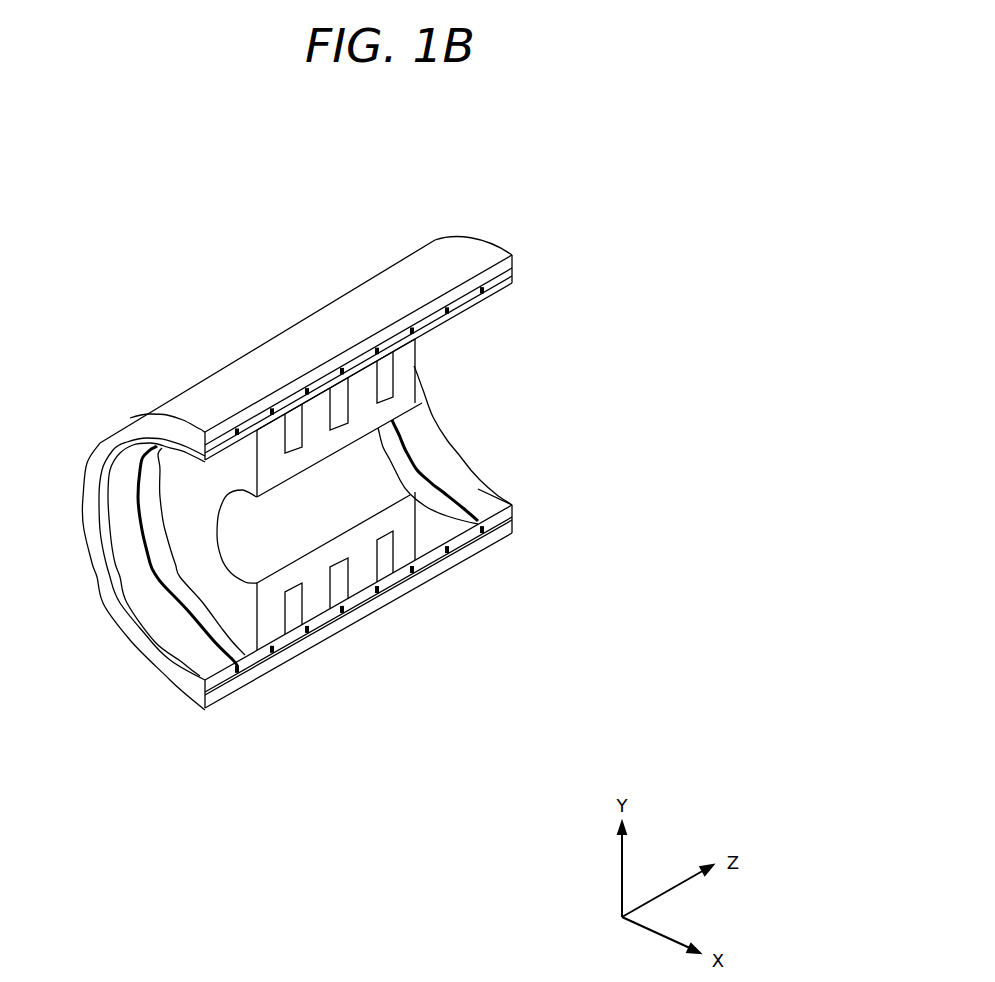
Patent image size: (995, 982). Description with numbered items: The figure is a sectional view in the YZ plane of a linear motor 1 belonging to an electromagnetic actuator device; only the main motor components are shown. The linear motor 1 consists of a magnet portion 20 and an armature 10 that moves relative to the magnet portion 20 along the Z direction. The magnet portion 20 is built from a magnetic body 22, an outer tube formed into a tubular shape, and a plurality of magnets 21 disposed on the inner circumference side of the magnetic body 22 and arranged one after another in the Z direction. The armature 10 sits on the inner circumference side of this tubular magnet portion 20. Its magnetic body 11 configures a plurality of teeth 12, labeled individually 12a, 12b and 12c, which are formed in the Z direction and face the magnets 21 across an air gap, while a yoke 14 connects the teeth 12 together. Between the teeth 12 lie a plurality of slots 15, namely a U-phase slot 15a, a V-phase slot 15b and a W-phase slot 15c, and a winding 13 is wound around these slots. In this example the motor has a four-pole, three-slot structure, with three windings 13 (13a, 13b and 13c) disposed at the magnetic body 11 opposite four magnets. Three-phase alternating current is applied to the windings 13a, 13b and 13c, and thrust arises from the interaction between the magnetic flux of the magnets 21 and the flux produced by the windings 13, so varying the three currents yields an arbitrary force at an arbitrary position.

The linear motor 1 is at (165, 248).
The armature 10 is at (185, 582).
The magnetic body 11 is at (233, 618).
The teeth 12 is at (313, 413).
The upper pillar 12a is at (407, 367).
The upper pillar 12b is at (407, 367).
The upper pillar 12c is at (273, 437).
The winding 13 is at (495, 660).
The winding 13a is at (292, 615).
The winding 13b is at (337, 587).
The winding 13c is at (387, 563).
The yoke 14 is at (313, 568).
The slots 15 is at (567, 387).
The U-phase slot 15a is at (290, 447).
The V-phase slot 15b is at (372, 429).
The W-phase slot 15c is at (423, 403).
The magnet portion 20 is at (465, 237).
The magnets 21 is at (493, 523).
The magnetic body 22 is at (430, 258).